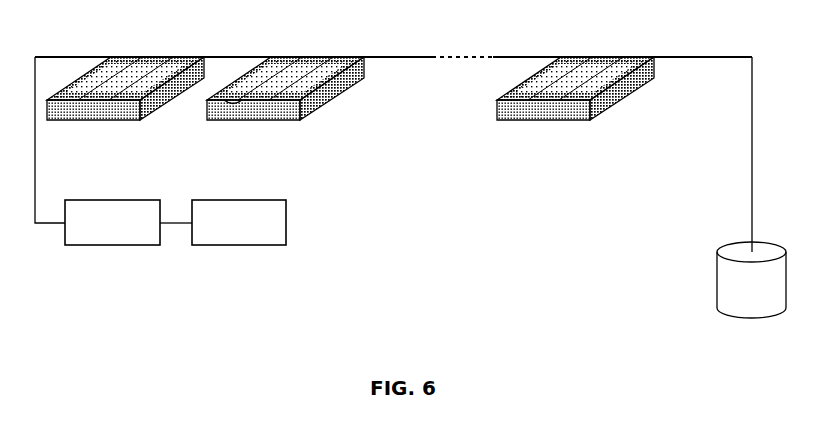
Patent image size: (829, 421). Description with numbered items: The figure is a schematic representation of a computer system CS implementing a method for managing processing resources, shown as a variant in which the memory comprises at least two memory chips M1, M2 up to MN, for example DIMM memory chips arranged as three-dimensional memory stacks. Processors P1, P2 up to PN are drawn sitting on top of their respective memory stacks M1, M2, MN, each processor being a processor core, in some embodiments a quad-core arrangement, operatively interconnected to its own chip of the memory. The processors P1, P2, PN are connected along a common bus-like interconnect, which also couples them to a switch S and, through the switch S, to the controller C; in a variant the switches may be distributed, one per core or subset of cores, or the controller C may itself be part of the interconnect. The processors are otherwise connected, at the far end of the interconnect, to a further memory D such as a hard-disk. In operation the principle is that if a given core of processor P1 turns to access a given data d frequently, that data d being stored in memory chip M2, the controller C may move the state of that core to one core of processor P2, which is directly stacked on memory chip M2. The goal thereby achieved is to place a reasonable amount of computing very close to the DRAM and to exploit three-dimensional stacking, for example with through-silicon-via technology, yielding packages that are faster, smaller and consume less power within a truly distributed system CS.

The first processor P1 is at (200, 57).
The second processor P2 is at (382, 57).
The N-th processor PN is at (580, 43).
The first memory chip M1 is at (125, 122).
The second memory chip M2 is at (213, 113).
The N-th memory chip MN is at (543, 118).
The data d is at (283, 110).
The switch S is at (92, 198).
The controller C is at (245, 203).
The memory D is at (732, 294).
The computer system CS is at (500, 228).